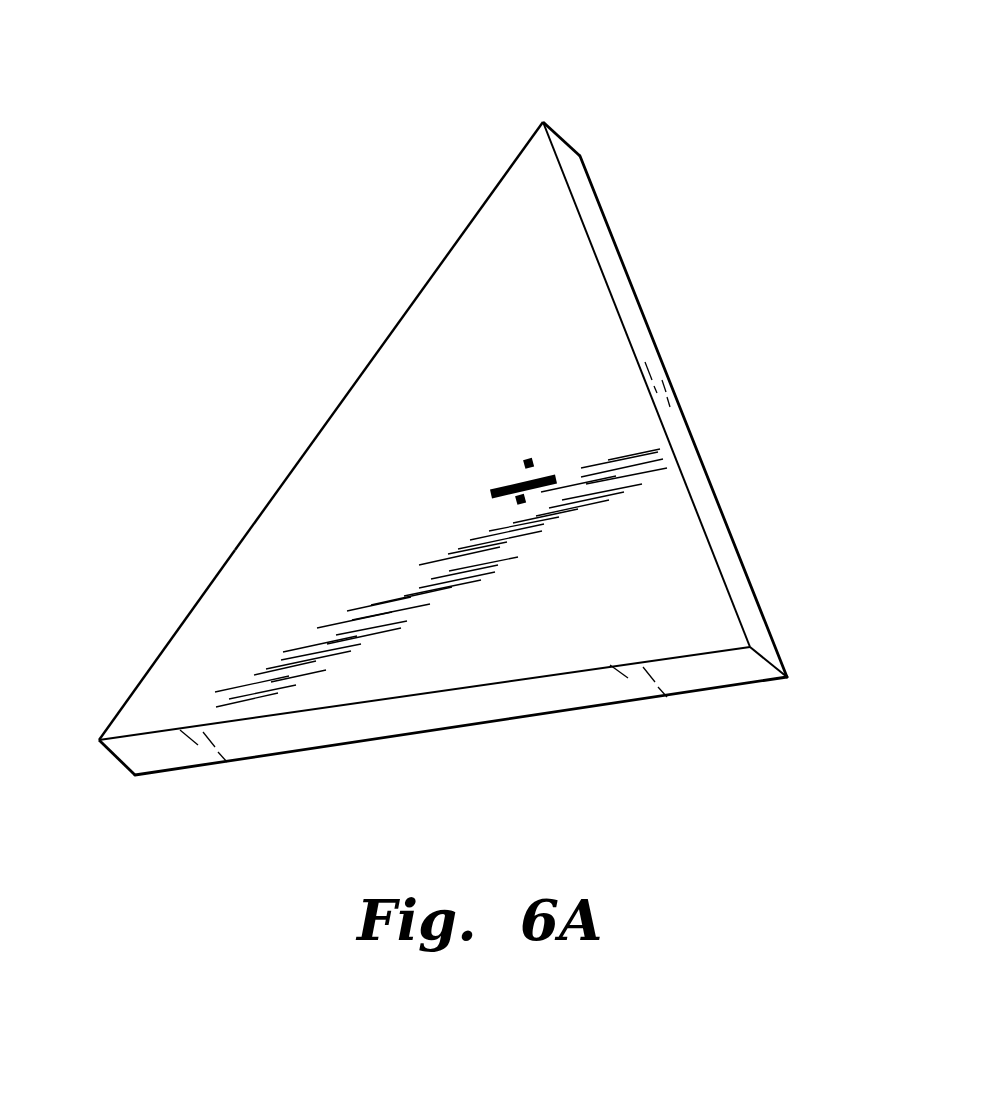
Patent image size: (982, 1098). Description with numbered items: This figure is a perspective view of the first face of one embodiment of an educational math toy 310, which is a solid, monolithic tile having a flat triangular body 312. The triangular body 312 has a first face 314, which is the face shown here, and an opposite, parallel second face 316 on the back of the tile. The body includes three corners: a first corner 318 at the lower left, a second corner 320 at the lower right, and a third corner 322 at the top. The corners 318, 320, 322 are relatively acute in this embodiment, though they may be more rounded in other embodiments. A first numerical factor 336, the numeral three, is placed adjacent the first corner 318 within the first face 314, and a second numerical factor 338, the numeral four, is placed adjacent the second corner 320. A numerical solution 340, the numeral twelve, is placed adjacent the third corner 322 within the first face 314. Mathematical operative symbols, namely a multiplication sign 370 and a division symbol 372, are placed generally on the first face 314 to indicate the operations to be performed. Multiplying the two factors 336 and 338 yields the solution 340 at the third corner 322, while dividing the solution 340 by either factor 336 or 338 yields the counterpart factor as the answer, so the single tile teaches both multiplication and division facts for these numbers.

The educational math toy 310 is at (237, 98).
The flat triangular body 312 is at (370, 358).
The first face 314 is at (322, 460).
The second face 316 is at (258, 548).
The first corner 318 is at (112, 757).
The second corner 320 is at (768, 648).
The third corner 322 is at (580, 156).
The first numerical factor 336 is at (195, 640).
The second numerical factor 338 is at (690, 566).
The numerical solution 340 is at (546, 259).
The multiplication sign 370 is at (400, 466).
The division symbol 372 is at (528, 462).